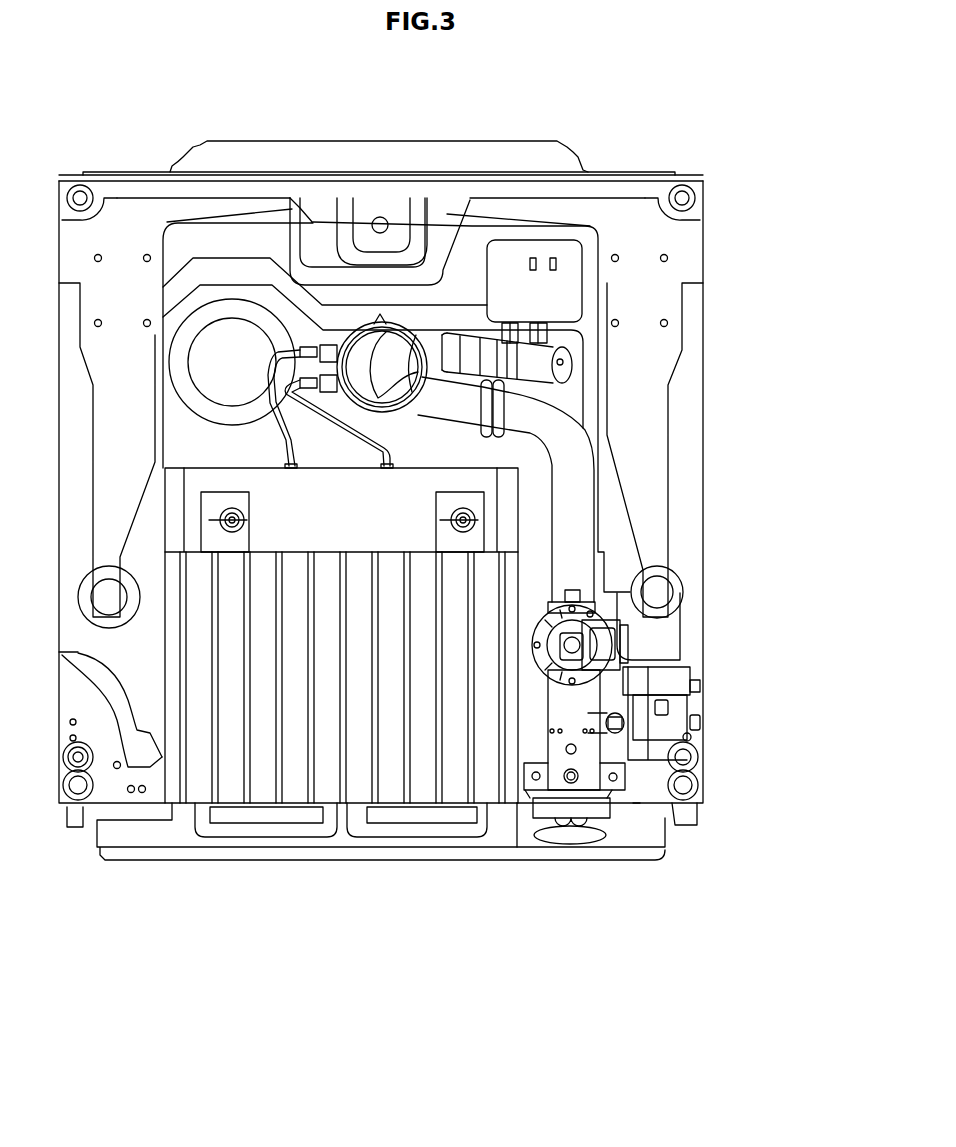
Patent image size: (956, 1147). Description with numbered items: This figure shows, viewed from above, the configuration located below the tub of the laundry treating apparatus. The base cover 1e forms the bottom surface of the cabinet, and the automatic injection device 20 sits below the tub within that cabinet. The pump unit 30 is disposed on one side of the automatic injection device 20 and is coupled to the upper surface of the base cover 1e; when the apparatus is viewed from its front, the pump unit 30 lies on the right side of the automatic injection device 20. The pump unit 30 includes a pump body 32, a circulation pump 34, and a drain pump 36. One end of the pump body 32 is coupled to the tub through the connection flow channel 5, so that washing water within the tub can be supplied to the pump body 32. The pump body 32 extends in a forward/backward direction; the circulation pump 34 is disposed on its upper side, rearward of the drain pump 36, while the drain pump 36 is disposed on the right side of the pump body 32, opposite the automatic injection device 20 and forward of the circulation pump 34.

The base cover 1e is at (703, 313).
The connection flow channel 5 is at (573, 510).
The automatic injection device 20 is at (288, 748).
The pump unit 30 is at (679, 734).
The pump body 32 is at (587, 765).
The circulation pump 34 is at (600, 657).
The drain pump 36 is at (709, 715).